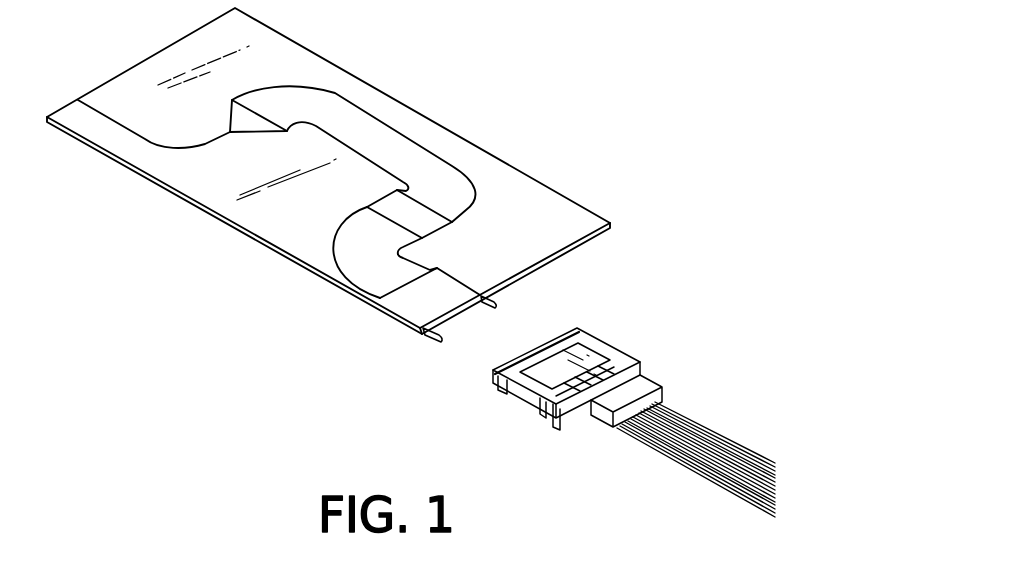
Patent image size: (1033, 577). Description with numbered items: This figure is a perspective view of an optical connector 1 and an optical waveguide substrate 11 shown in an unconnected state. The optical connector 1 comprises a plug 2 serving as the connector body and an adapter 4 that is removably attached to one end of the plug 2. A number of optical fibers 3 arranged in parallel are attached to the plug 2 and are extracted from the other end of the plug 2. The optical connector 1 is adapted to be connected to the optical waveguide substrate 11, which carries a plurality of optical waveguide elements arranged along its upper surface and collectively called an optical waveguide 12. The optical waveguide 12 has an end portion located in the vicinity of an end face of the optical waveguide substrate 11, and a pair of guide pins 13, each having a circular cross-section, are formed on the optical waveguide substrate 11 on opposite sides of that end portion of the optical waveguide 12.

The optical connector 1 is at (637, 350).
The plug 2 is at (608, 344).
The optical fibers 3 is at (690, 413).
The adapter 4 is at (545, 349).
The optical waveguide substrate 11 is at (277, 258).
The optical waveguide 12 is at (364, 263).
The guide pins 13 is at (433, 326).